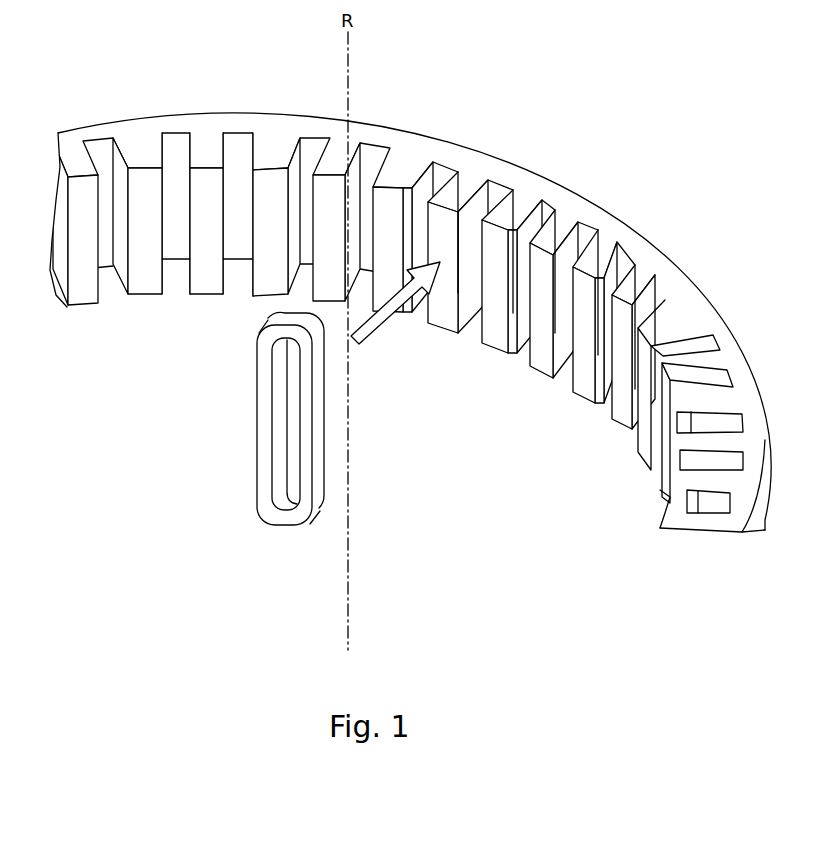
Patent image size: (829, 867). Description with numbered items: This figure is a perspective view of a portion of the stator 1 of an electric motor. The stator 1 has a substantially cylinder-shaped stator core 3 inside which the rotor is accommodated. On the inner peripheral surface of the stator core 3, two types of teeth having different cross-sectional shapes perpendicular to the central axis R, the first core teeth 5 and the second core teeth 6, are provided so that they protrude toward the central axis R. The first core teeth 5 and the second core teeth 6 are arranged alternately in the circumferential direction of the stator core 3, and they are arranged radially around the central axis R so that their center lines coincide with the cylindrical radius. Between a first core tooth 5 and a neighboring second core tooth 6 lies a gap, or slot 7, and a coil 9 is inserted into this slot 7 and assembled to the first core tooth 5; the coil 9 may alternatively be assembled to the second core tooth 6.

The stator 1 is at (405, 322).
The stator core 3 is at (414, 322).
The first core tooth 5 is at (385, 280).
The second core tooth 6 is at (328, 273).
The gap (slot) 7 is at (337, 272).
The coil 9 is at (267, 419).